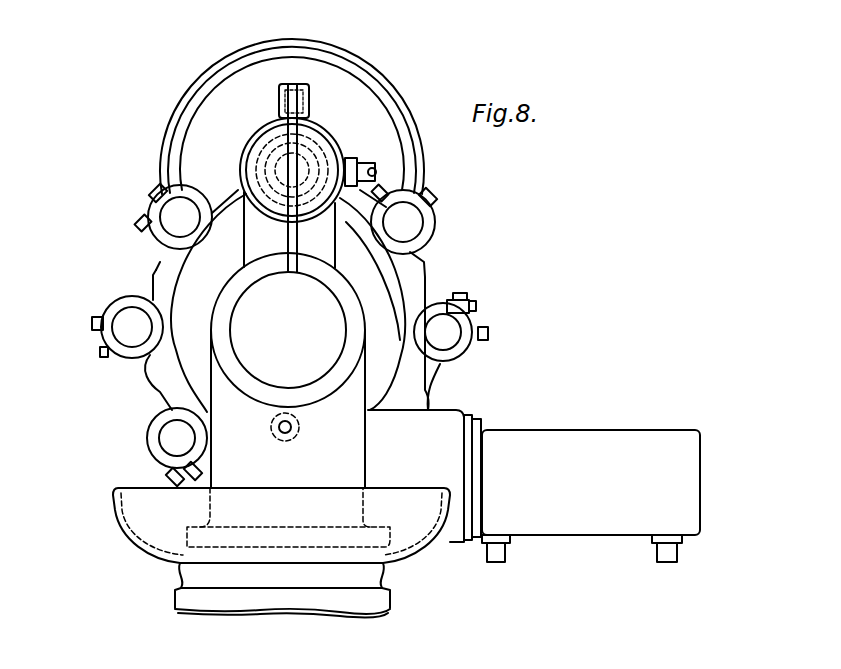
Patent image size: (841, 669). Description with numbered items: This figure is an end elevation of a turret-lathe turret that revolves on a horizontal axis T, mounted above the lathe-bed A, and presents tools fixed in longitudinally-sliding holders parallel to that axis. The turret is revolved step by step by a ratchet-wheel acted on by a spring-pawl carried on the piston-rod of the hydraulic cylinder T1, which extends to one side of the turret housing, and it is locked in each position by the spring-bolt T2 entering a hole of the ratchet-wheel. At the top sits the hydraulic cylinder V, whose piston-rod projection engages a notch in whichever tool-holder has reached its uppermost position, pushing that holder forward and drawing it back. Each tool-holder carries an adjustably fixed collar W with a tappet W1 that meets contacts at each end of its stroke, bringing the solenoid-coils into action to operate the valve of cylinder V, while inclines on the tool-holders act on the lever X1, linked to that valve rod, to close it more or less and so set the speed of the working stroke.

The lever X1 is at (300, 108).
The hydraulic cylinder V is at (312, 148).
The horizontal axis T is at (288, 330).
The hydraulic cylinder T1 is at (591, 496).
The spring-bolt T2 is at (292, 431).
The lathe-bed A is at (281, 525).
The collar W is at (432, 236).
The tappet W1 is at (97, 327).